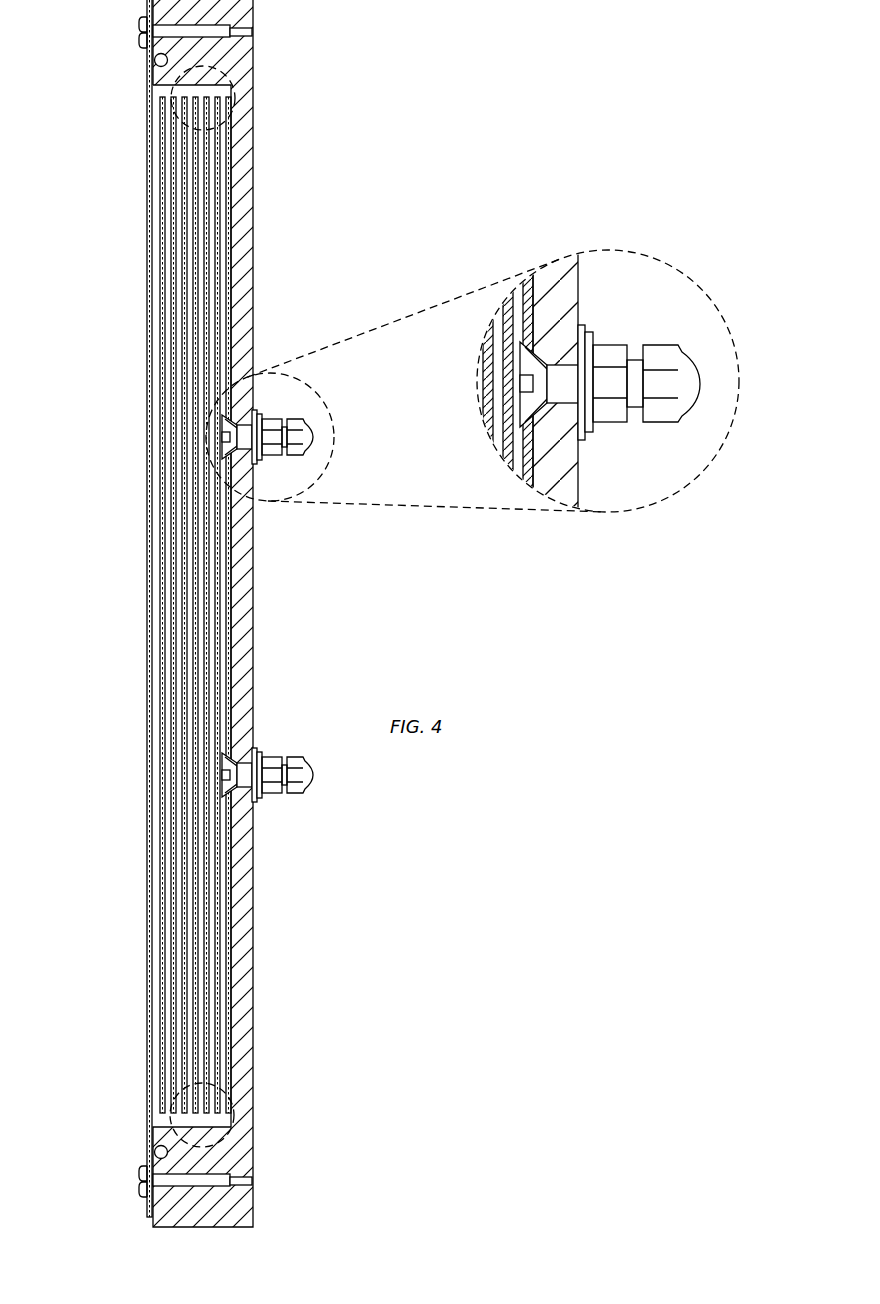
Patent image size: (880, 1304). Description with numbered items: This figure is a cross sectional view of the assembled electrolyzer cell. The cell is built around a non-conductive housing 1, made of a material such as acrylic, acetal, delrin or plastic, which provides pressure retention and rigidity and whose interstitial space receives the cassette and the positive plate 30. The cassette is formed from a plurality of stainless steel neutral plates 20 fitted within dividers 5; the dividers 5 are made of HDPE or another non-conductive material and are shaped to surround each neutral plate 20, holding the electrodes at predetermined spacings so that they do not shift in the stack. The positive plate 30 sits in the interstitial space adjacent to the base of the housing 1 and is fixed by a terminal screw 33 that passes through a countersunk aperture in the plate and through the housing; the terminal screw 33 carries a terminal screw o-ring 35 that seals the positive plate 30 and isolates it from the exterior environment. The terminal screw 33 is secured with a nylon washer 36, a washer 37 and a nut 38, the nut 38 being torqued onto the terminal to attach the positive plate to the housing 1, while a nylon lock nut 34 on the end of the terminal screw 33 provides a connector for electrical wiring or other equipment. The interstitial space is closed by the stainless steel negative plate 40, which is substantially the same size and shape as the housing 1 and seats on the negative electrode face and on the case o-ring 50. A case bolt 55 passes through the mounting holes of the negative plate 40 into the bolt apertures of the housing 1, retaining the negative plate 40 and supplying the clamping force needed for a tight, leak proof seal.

The housing 1 is at (328, 71).
The dividers 5 is at (158, 91).
The neutral plates 20 is at (160, 297).
The positive plate 30 is at (236, 584).
The terminal screw 33 is at (530, 357).
The nylon lock nut 34 is at (700, 385).
The terminal screw o-ring 35 is at (508, 440).
The nylon washer 36 is at (585, 325).
The washer 37 is at (590, 436).
The nut 38 is at (613, 352).
The negative plate 40 is at (150, 468).
The case o-ring 50 is at (154, 58).
The case bolt 55 is at (140, 20).